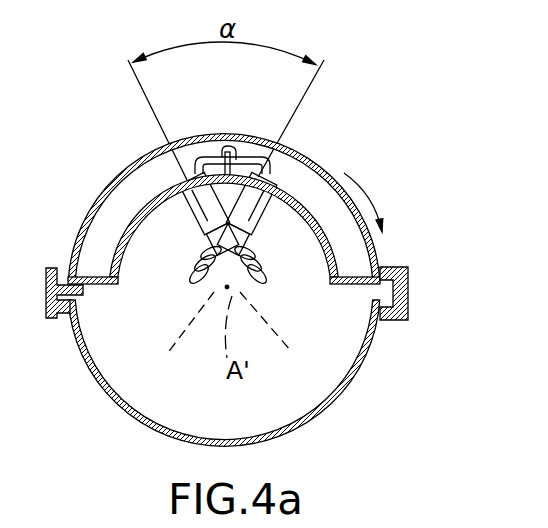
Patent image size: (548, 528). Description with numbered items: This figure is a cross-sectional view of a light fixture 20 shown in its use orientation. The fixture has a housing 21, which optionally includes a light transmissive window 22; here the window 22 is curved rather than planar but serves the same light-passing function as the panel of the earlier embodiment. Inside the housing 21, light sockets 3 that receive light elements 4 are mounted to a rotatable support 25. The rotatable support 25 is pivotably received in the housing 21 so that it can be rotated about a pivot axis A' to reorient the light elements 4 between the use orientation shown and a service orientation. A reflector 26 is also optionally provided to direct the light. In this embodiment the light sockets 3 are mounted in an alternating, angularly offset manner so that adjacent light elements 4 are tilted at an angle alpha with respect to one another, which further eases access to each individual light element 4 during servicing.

The light sockets 3 is at (182, 178).
The light elements 4 is at (200, 262).
The light fixture 20 is at (354, 140).
The housing 21 is at (57, 319).
The light transmissive window 22 is at (137, 421).
The rotatable support 25 is at (107, 197).
The reflector 26 is at (318, 232).